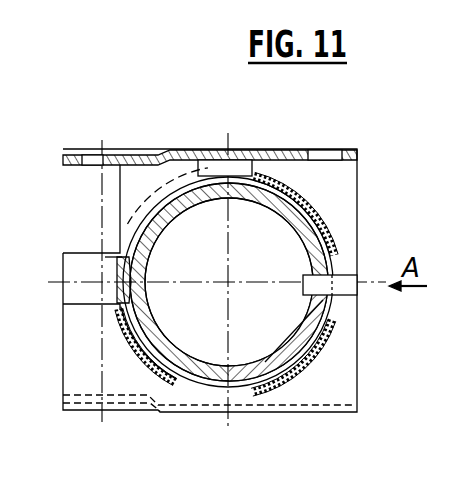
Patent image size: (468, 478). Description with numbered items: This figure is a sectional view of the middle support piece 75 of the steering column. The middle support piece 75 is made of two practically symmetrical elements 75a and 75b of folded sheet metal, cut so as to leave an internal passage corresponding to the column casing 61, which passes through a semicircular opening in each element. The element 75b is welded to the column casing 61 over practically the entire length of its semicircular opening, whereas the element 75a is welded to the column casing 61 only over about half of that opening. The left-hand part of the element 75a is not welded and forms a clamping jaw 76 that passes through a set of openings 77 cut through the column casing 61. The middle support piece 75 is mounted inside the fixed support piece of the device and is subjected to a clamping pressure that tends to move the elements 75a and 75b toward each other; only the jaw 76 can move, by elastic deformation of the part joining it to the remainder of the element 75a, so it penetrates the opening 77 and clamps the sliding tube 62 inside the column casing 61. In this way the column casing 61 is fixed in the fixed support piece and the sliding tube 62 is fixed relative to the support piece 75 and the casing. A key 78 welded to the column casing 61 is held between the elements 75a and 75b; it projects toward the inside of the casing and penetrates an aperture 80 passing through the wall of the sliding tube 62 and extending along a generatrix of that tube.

The column casing 61 is at (253, 173).
The sliding tube 62 is at (297, 228).
The middle support piece 75 is at (334, 423).
The element 75a is at (353, 177).
The element 75b is at (343, 378).
The clamping jaw 76 is at (75, 190).
The openings 77 is at (122, 259).
The key 78 is at (343, 292).
The aperture 80 is at (304, 312).